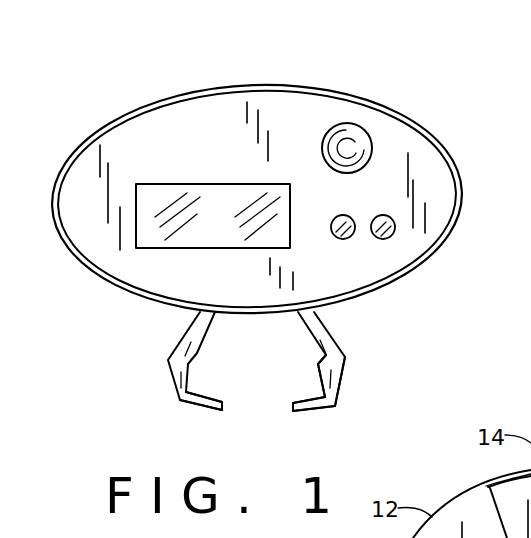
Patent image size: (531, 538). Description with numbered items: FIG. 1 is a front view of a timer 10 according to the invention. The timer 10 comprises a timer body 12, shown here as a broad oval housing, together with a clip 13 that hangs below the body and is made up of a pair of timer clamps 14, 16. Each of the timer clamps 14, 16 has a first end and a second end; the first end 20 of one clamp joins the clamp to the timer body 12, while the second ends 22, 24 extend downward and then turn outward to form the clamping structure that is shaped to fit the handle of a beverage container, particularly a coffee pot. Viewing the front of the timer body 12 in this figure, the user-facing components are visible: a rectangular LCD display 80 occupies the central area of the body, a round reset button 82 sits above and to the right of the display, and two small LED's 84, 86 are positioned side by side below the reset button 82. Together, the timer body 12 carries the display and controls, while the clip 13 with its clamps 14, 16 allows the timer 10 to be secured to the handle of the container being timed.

The timer 10 is at (375, 76).
The timer body 12 is at (408, 121).
The clip 13 is at (343, 380).
The timer clamp 14 is at (345, 358).
The timer clamp 16 is at (168, 360).
The first end 20 is at (507, 480).
The second end 22 is at (293, 411).
The second end 24 is at (222, 405).
The LCD display 80 is at (136, 184).
The reset button 82 is at (345, 122).
The LED 84 is at (352, 238).
The LED 86 is at (395, 230).